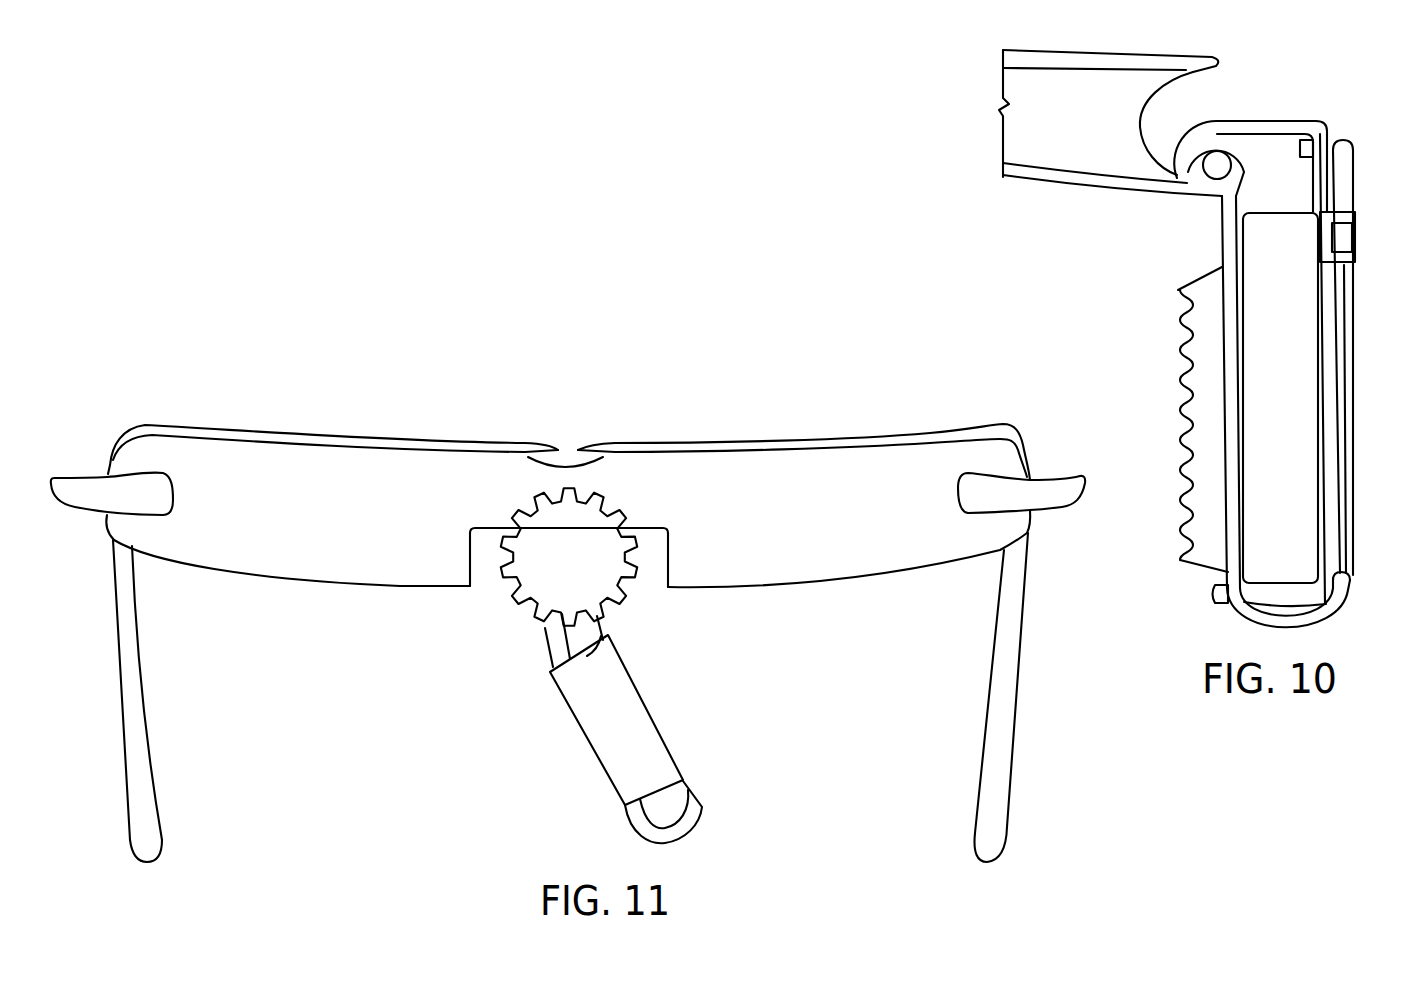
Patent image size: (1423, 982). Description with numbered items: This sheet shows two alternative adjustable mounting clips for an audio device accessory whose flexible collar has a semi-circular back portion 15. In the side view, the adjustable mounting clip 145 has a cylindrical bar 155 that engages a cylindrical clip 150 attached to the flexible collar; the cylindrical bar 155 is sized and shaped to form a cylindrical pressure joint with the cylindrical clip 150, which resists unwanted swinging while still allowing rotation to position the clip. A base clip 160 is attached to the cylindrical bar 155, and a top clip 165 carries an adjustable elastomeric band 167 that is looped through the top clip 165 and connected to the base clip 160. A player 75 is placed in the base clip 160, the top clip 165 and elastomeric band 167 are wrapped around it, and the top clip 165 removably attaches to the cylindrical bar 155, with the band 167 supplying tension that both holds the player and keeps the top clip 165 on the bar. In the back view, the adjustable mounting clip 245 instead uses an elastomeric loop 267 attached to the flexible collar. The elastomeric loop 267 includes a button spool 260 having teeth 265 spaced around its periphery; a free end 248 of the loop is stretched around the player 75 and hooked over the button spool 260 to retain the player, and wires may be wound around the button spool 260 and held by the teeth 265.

In FIG. 10, the semi-circular back portion 15 is at (1113, 62).
In FIG. 10, the adjustable mounting clip 145 is at (1377, 125).
In FIG. 10, the cylindrical clip 150 is at (1233, 171).
In FIG. 10, the cylindrical bar 155 is at (1209, 152).
In FIG. 10, the base clip 160 is at (1227, 576).
In FIG. 10, the top clip 165 is at (1281, 127).
In FIG. 10, the adjustable elastomeric band 167 is at (1340, 383).
In FIG. 10, the player 75 is at (1294, 355).
In FIG. 11, the adjustable mounting clip 245 is at (588, 731).
In FIG. 11, the free end 248 is at (688, 825).
In FIG. 11, the button spool 260 is at (595, 503).
In FIG. 11, the teeth 265 is at (637, 593).
In FIG. 11, the elastomeric loop 267 is at (688, 791).